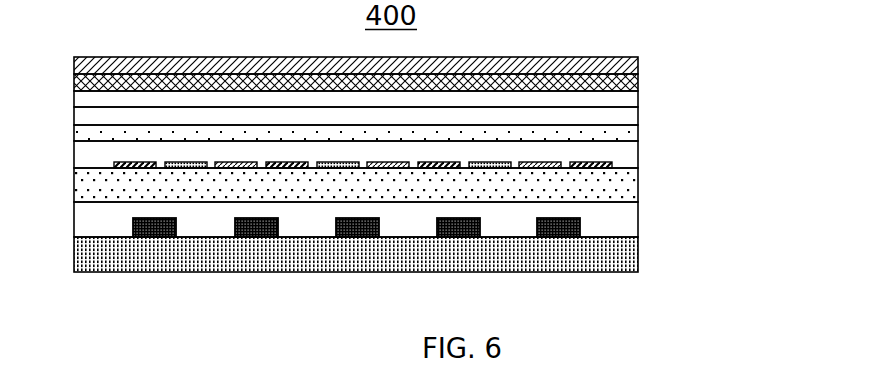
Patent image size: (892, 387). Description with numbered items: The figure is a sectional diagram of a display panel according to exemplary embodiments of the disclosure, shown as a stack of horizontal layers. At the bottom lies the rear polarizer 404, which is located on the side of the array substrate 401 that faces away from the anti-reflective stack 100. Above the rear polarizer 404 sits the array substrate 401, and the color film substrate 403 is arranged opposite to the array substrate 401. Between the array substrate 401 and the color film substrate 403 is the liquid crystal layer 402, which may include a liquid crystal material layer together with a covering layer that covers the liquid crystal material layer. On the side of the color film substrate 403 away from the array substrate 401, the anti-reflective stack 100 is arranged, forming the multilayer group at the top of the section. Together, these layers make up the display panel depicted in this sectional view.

The anti-reflective stack 100 is at (662, 57).
The color film substrate 403 is at (631, 152).
The liquid crystal layer 402 is at (631, 191).
The array substrate 401 is at (633, 221).
The rear polarizer 404 is at (633, 253).